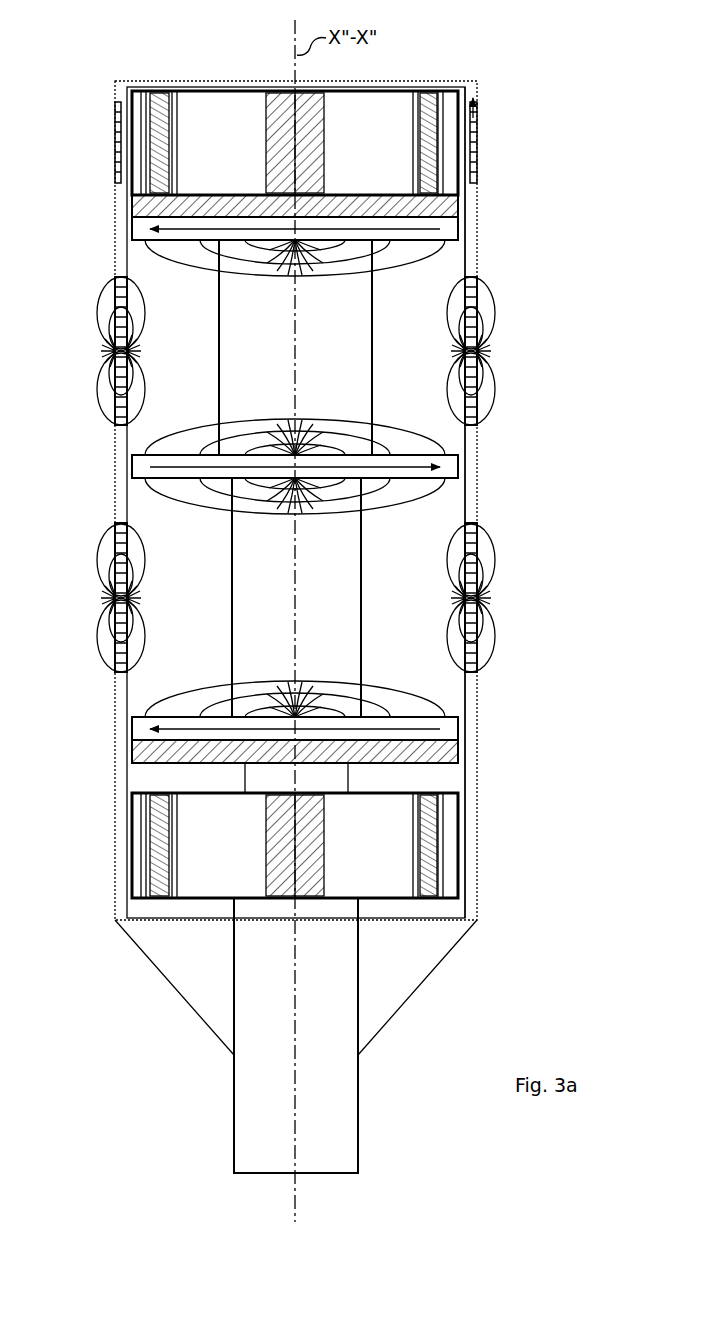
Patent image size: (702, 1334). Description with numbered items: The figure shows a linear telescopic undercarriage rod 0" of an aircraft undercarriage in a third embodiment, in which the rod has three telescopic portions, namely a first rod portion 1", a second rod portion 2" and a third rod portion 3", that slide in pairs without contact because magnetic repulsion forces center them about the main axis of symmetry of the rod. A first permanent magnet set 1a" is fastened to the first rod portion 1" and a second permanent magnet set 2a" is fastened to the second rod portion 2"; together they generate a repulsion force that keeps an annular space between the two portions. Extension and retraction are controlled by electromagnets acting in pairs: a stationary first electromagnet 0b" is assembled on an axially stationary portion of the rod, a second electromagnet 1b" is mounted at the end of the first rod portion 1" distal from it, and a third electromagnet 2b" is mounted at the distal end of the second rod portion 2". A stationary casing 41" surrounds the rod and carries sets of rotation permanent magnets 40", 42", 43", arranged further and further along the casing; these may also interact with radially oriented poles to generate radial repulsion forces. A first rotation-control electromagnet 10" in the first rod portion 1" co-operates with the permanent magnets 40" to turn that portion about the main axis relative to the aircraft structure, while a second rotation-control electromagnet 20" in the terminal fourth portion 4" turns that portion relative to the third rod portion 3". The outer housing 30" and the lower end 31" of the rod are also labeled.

The linear telescopic undercarriage rod 0 is at (390, 92).
The stationary first electromagnet 0b is at (450, 228).
The first rod portion 1 is at (219, 345).
The first permanent magnet set 1a is at (364, 350).
The second electromagnet 1b is at (450, 463).
The second rod portion 2 is at (232, 556).
The second permanent magnet set 2a is at (353, 566).
The third electromagnet 2b is at (452, 727).
The third rod portion 3 is at (246, 776).
The terminal fourth portion 4 is at (236, 1100).
The first rotation-control electromagnet 10 is at (130, 142).
The second rotation-control electromagnet 20 is at (132, 856).
The housing 30 is at (134, 82).
The shaft end 31 is at (242, 1180).
The set of rotation permanent magnets 40 is at (478, 110).
The stationary casing 41 is at (473, 206).
The set of rotation permanent magnets 42 is at (478, 396).
The set of rotation permanent magnets 43 is at (478, 622).